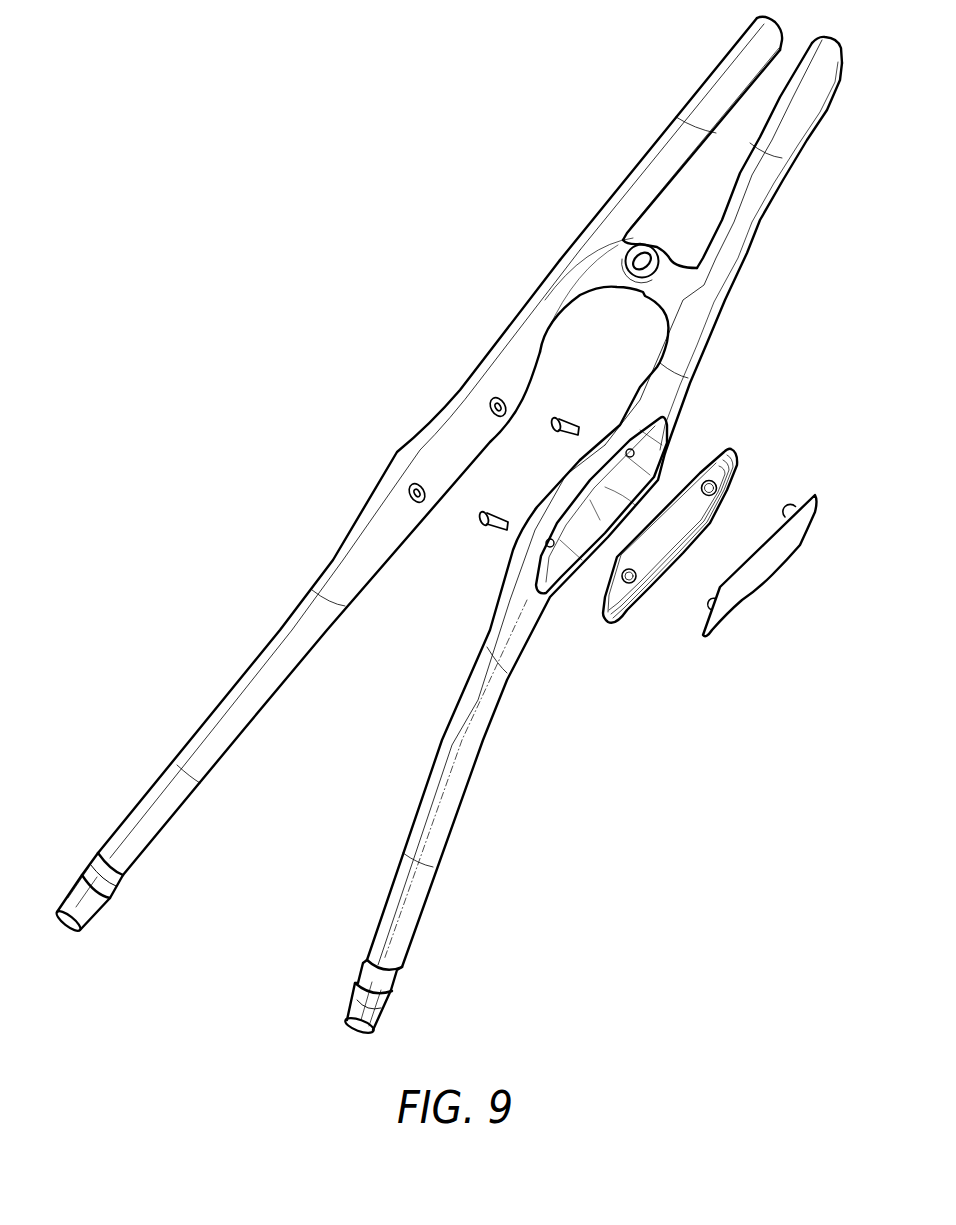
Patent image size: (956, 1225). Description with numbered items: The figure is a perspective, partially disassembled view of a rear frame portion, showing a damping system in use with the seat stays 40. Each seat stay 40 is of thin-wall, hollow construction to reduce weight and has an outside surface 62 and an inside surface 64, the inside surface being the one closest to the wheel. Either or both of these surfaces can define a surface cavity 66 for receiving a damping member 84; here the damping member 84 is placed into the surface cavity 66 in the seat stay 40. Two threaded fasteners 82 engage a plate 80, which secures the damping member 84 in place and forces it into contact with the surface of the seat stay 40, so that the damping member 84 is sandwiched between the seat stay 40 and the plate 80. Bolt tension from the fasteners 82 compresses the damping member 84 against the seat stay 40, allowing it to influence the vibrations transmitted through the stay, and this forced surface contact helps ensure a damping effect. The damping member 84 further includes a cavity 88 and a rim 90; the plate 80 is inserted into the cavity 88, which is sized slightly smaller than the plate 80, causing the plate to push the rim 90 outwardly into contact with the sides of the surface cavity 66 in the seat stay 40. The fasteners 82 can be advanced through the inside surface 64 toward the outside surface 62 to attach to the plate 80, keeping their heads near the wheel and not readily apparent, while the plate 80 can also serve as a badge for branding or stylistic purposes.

The seat stay 40 is at (557, 270).
The outside surface 62 is at (453, 783).
The inside surface 64 is at (222, 735).
The surface cavity 66 is at (560, 533).
The plate 80 is at (762, 575).
The threaded fasteners 82 is at (552, 422).
The damping member 84 is at (723, 483).
The cavity 88 is at (643, 563).
The rim 90 is at (709, 557).